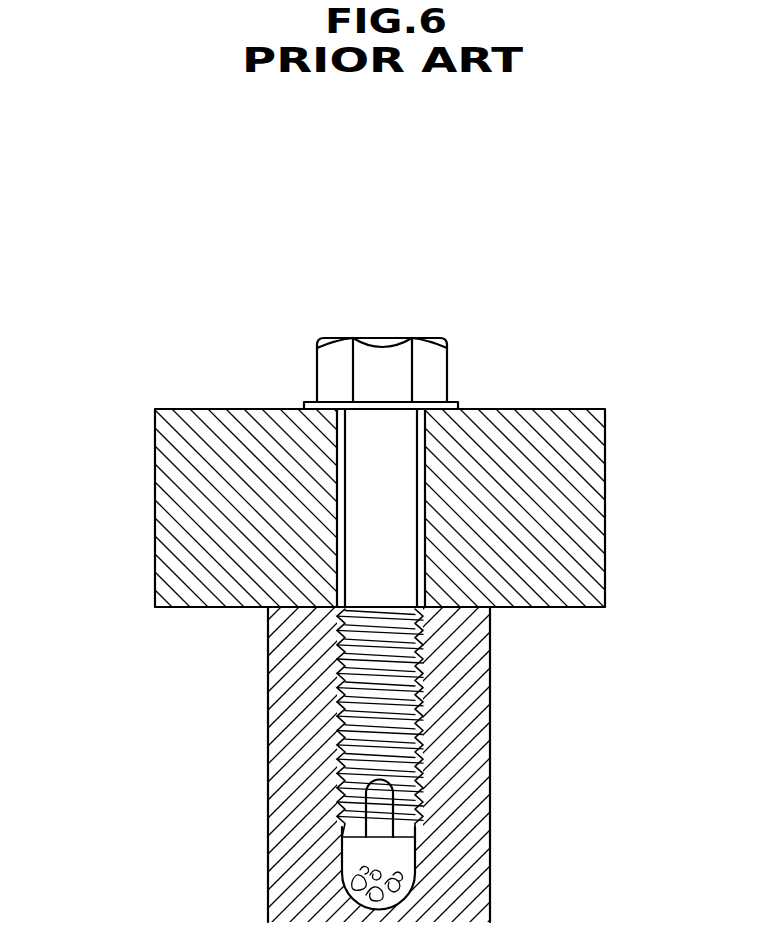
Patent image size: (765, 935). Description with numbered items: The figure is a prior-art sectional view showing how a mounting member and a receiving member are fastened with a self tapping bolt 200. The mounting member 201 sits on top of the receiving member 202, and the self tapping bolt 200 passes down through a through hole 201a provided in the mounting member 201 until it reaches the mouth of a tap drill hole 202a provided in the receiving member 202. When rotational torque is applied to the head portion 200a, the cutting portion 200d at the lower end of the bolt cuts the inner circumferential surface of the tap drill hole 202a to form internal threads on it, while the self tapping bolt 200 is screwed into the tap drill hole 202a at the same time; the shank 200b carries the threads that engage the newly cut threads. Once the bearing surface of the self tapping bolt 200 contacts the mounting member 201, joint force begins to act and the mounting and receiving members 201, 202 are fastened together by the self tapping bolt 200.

The self tapping bolt 200 is at (513, 520).
The head portion 200a is at (380, 357).
The bolt shank 200b is at (403, 517).
The cutting portion 200d is at (383, 813).
The mounting member 201 is at (190, 502).
The through hole 201a is at (338, 472).
The receiving member 202 is at (287, 742).
The tap drill hole 202a is at (343, 860).